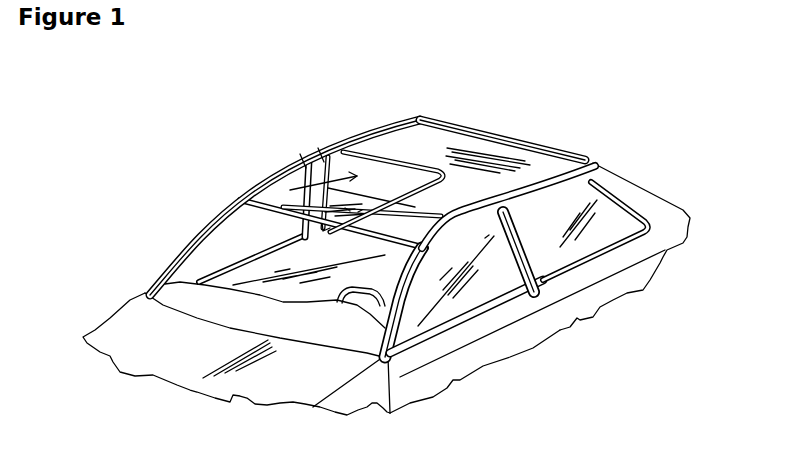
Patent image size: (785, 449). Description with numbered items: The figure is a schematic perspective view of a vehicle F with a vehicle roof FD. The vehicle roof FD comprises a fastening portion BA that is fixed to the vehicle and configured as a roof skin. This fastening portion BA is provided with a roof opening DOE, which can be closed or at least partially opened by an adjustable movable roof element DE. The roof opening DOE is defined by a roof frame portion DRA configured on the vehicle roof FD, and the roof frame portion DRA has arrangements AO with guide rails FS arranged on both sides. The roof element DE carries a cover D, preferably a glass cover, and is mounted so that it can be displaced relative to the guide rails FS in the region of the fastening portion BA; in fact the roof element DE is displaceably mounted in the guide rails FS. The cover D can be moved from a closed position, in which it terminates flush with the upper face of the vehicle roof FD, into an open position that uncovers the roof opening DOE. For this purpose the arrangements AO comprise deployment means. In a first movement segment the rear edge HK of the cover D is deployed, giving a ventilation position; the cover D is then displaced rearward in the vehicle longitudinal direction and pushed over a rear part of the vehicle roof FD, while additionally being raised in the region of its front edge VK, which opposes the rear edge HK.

The vehicle F is at (673, 62).
The cover D is at (447, 143).
The roof element DE is at (310, 140).
The vehicle roof FD is at (360, 137).
The rear edge HK is at (527, 137).
The fastening portion BA is at (600, 162).
The arrangements AO is at (307, 163).
The guide rails FS is at (277, 173).
The roof opening DOE is at (240, 203).
The front edge VK is at (465, 176).
The roof frame portion DRA is at (508, 205).